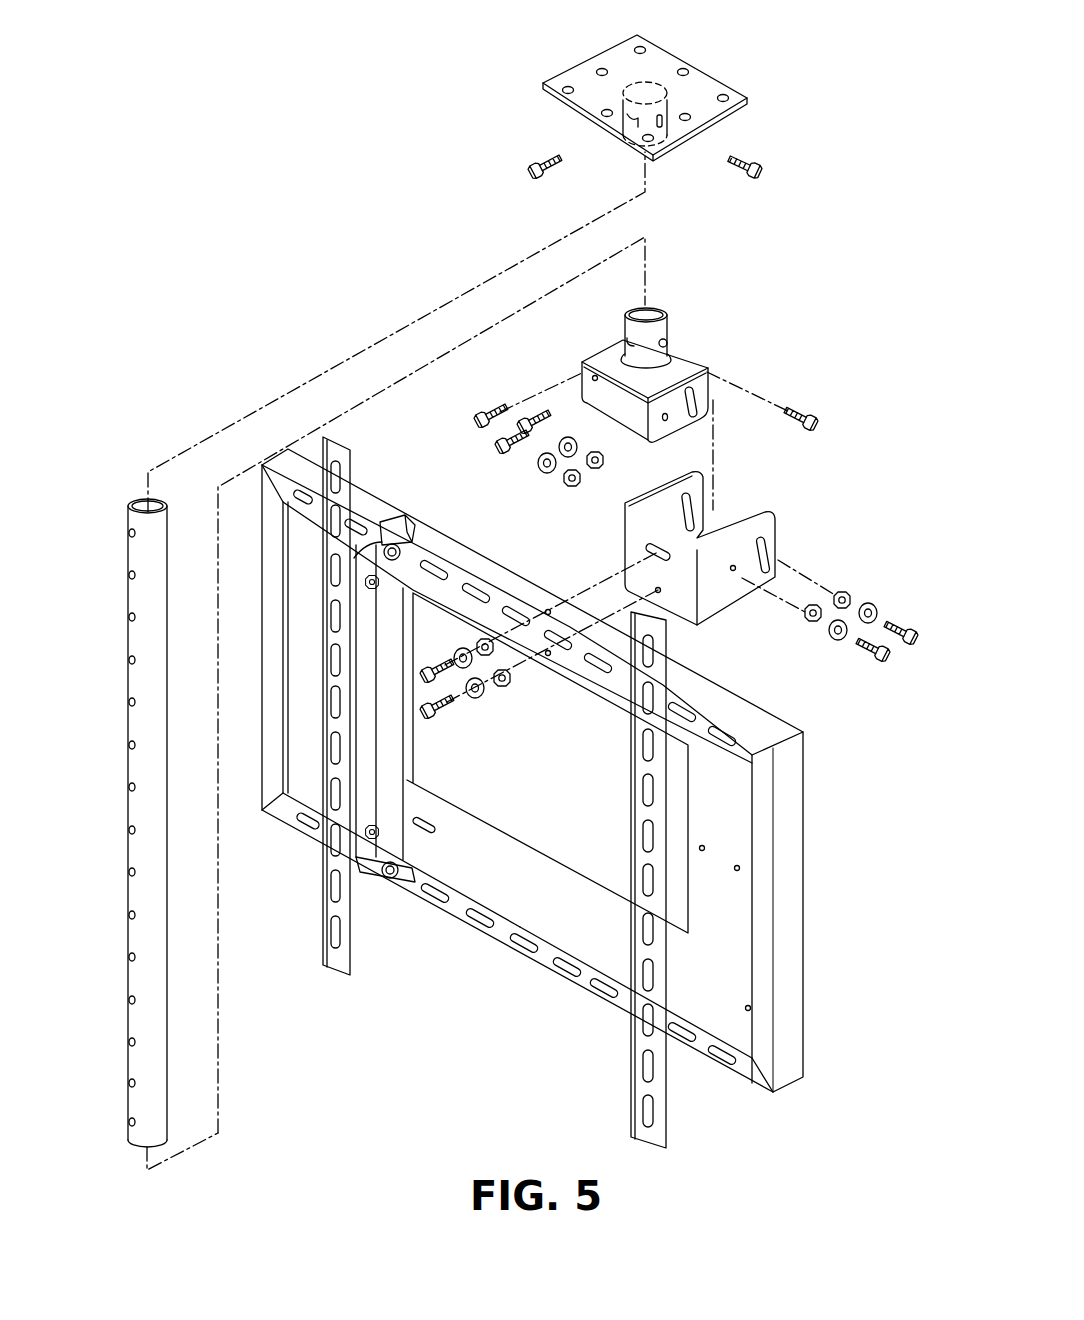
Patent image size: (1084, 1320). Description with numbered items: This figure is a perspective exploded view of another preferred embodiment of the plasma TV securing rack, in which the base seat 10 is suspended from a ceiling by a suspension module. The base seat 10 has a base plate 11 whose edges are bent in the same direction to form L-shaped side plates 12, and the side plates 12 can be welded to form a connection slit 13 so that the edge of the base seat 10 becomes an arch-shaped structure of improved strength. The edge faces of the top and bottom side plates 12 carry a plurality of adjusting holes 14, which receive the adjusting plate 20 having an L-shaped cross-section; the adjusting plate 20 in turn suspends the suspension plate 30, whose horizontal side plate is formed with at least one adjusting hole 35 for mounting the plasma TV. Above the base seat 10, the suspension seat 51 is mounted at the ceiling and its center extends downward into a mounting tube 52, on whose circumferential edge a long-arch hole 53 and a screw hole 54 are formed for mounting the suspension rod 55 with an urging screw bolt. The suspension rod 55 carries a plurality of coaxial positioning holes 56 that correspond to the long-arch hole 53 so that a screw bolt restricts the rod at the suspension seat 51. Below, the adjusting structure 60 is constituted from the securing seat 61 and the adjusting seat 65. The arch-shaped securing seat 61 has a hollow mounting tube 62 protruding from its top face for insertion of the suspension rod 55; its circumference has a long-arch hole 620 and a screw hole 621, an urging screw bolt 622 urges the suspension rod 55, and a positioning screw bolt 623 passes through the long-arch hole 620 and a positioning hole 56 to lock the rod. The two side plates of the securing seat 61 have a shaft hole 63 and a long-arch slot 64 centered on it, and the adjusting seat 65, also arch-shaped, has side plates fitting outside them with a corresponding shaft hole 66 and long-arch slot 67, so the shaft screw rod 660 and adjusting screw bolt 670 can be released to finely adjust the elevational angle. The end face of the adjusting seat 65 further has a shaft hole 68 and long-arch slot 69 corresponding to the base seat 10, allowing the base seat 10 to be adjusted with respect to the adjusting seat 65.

The base seat 10 is at (532, 803).
The base plate 11 is at (540, 918).
The side plates 12 is at (445, 908).
The connection slit 13 is at (770, 1090).
The adjusting holes 14 is at (600, 994).
The adjusting plate 20 is at (388, 727).
The suspension plate 30 is at (445, 792).
The adjusting hole 35 is at (335, 891).
The suspension seat 51 is at (572, 73).
The mounting tube 52 is at (676, 100).
The long-arch hole 53 is at (630, 128).
The screw hole 54 is at (662, 132).
The suspension rod 55 is at (130, 596).
The positioning holes 56 is at (130, 674).
The adjusting structure 60 is at (812, 462).
The securing seat 61 is at (705, 372).
The mounting tube 62 is at (660, 318).
The long-arch hole 620 is at (627, 342).
The screw hole 621 is at (668, 341).
The urging screw bolt 622 is at (800, 414).
The positioning screw bolt 623 is at (496, 412).
The shaft hole 63 is at (661, 418).
The long-arch slot 64 is at (697, 404).
The adjusting seat 65 is at (717, 624).
The shaft hole 66 is at (736, 572).
The long-arch slot 67 is at (769, 555).
The shaft hole 68 is at (655, 591).
The long-arch slot 69 is at (648, 551).
The shaft screw rod 660 is at (868, 662).
The adjusting screw bolt 670 is at (900, 622).